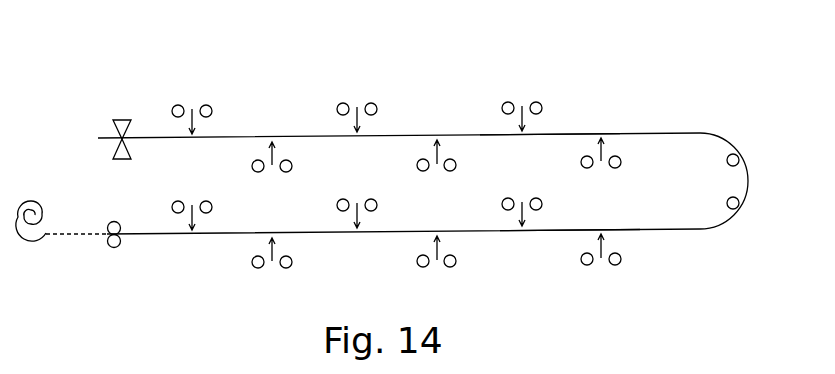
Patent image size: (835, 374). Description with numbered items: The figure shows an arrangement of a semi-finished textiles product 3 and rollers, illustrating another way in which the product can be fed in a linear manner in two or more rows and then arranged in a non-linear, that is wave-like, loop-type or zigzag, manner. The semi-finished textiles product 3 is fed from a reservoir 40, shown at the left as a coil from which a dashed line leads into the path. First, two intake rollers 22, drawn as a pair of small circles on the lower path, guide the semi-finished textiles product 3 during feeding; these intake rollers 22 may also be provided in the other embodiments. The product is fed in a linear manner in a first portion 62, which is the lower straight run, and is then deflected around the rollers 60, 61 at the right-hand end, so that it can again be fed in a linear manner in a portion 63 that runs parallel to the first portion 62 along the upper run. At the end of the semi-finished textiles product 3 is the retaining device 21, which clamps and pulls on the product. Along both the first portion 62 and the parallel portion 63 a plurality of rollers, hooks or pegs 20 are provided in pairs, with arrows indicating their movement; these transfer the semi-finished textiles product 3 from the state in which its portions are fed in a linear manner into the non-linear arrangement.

The semi-finished textiles product 3 is at (657, 134).
The rollers, hooks or pegs 20 is at (206, 104).
The retaining device 21 is at (122, 119).
The intake rollers 22 is at (116, 248).
The reservoir 40 is at (31, 200).
The roller 60 is at (735, 208).
The roller 61 is at (736, 157).
The first portion 62 is at (570, 231).
The portion 63 is at (555, 134).